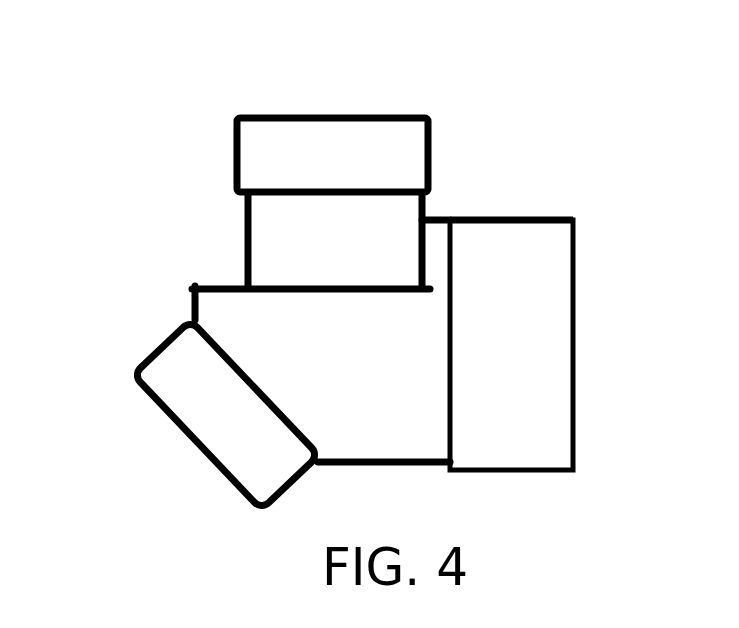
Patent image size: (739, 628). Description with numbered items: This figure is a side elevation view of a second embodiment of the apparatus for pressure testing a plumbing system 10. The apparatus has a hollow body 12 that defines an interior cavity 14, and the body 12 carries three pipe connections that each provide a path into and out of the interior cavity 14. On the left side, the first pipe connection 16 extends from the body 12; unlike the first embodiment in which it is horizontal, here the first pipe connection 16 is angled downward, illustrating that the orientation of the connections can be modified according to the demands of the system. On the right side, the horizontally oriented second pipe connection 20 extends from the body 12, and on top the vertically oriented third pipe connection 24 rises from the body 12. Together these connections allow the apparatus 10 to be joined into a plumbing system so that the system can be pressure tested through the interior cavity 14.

The apparatus for pressure testing a plumbing system 10 is at (145, 108).
The hollow body 12 is at (472, 243).
The interior cavity 14 is at (392, 115).
The first pipe connection 16 is at (170, 420).
The second pipe connection 20 is at (578, 415).
The third pipe connection 24 is at (235, 114).